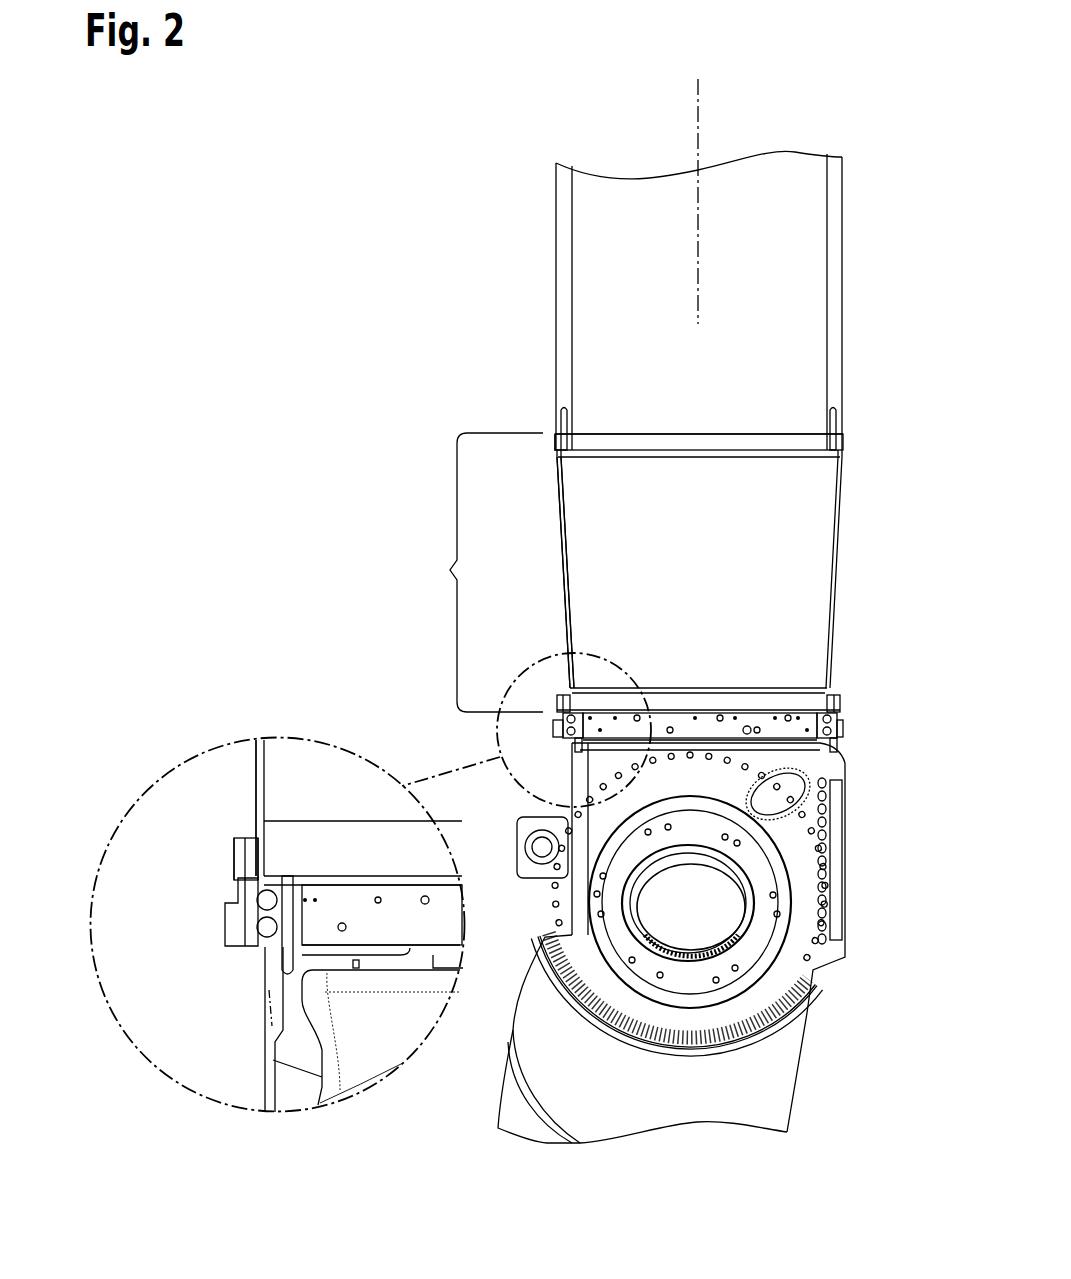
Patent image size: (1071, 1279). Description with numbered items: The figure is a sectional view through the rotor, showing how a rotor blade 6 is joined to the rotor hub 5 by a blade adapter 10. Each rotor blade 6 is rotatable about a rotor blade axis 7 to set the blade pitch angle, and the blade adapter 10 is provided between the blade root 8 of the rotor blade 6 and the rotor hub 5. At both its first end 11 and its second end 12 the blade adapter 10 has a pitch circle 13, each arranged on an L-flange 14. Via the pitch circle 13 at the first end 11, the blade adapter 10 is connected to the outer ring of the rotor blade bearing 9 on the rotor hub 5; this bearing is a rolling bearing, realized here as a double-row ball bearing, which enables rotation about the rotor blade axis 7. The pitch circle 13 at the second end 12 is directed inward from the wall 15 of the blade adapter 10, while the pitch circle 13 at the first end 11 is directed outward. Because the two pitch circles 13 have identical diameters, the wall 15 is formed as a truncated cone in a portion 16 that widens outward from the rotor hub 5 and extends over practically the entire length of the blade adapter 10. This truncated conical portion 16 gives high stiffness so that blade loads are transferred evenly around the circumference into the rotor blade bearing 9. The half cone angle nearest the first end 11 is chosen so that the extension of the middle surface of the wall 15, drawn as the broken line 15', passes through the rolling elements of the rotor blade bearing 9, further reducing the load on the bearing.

The rotor hub 5 is at (800, 848).
The rotor blade 6 is at (556, 248).
The rotor blade axis 7 is at (692, 90).
The blade root 8 is at (840, 420).
The rotor blade bearing 9 is at (853, 713).
The blade adapter 10 is at (853, 555).
The first end 11 is at (845, 688).
The second end 12 is at (853, 445).
The pitch circle 13 is at (555, 440).
The L-flange 14 is at (568, 450).
The wall 15 is at (398, 666).
The broken line 15' is at (154, 905).
The truncated conical portion 16 is at (450, 570).